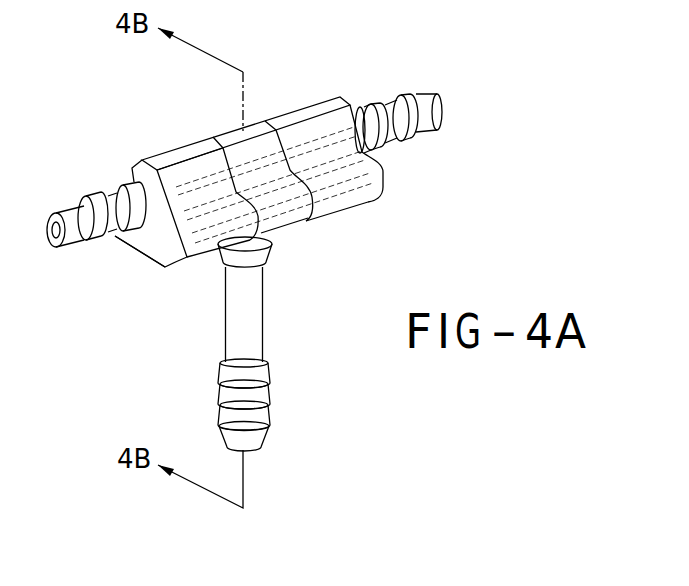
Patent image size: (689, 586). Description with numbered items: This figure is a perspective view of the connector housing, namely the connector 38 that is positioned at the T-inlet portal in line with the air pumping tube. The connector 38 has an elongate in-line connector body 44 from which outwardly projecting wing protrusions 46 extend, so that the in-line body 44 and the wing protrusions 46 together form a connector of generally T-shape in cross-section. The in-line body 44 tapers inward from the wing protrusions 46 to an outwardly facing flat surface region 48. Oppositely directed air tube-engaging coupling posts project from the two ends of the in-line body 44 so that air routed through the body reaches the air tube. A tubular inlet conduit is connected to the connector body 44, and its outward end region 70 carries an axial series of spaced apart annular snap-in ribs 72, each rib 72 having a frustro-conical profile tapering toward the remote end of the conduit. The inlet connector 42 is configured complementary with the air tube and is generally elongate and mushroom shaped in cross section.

The connector 38 is at (417, 231).
The inlet connector 42 is at (308, 93).
The in-line connector body 44 is at (181, 173).
The wing protrusions 46 is at (198, 225).
The flat surface region 48 is at (188, 153).
The outward end region 70 is at (257, 457).
The annular snap-in ribs 72 is at (226, 389).